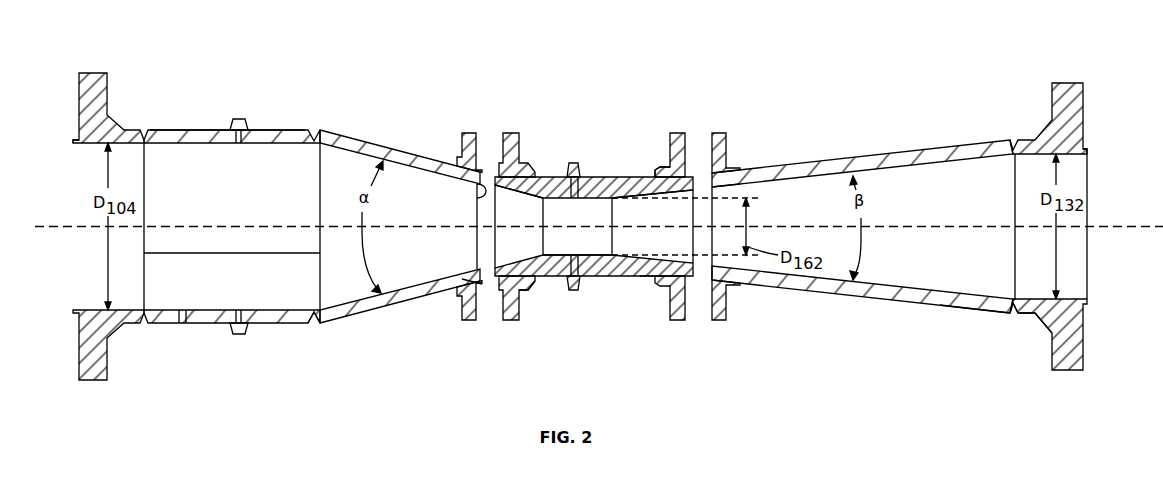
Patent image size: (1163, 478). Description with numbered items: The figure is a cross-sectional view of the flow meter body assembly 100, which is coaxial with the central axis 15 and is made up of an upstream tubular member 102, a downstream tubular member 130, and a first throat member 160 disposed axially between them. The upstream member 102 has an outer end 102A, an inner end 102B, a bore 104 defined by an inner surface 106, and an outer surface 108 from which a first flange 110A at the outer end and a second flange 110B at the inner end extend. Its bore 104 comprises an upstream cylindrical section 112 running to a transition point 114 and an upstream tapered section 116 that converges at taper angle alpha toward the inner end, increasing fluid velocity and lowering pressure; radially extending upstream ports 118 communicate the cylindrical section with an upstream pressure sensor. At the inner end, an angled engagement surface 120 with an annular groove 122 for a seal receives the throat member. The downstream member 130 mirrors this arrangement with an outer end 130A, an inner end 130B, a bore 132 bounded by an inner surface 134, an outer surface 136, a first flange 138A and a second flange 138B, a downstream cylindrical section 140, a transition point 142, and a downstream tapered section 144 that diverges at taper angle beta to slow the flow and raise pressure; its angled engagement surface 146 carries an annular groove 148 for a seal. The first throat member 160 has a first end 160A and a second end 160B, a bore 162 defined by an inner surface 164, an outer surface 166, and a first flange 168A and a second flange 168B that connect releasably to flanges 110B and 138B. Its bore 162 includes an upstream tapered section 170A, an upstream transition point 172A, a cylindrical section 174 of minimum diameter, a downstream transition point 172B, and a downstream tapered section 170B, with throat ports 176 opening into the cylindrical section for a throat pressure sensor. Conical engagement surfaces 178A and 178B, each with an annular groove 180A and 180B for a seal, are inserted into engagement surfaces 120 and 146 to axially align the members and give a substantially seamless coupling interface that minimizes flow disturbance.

The central axis 15 is at (58, 223).
The flow meter body assembly 100 is at (80, 48).
The upstream tubular member 102 is at (101, 92).
The outer end of upstream member 102A is at (70, 140).
The inner end of upstream member 102B is at (478, 276).
The bore of upstream member 104 is at (220, 213).
The inner surface of upstream member 106 is at (160, 145).
The outer surface of upstream member 108 is at (296, 130).
The first flange of upstream member 110A is at (91, 378).
The second flange of upstream member 110B is at (468, 135).
The upstream cylindrical section 112 is at (203, 300).
The transition point 114 is at (313, 324).
The upstream tapered section 116 is at (333, 296).
The upstream ports 118 is at (240, 121).
The upstream engagement surface 120 is at (476, 189).
The annular groove 122 is at (473, 270).
The downstream tubular member 130 is at (1060, 103).
The outer end of downstream member 130A is at (1088, 150).
The inner end of downstream member 130B is at (703, 300).
The bore of downstream member 132 is at (948, 196).
The inner surface of downstream member 134 is at (919, 284).
The outer surface of downstream member 136 is at (925, 149).
The first flange of downstream member 138A is at (1068, 363).
The second flange of downstream member 138B is at (727, 315).
The downstream cylindrical section 140 is at (1033, 296).
The transition point 142 is at (1008, 310).
The downstream tapered section 144 is at (979, 289).
The downstream engagement surface 146 is at (704, 178).
The annular groove 148 is at (716, 184).
The first throat member 160 is at (672, 134).
The first end of throat member 160A is at (514, 298).
The second end of throat member 160B is at (661, 167).
The bore of throat member 162 is at (592, 176).
The inner surface of throat member 164 is at (551, 175).
The outer surface of throat member 166 is at (612, 177).
The first flange of throat member 168A is at (513, 322).
The second flange of throat member 168B is at (680, 323).
The upstream tapered section of throat bore 170A is at (511, 133).
The downstream tapered section of throat bore 170B is at (651, 276).
The upstream transition point 172A is at (548, 200).
The downstream transition point 172B is at (637, 246).
The cylindrical section of throat bore 174 is at (610, 244).
The throat ports 176 is at (570, 165).
The first throat engagement surface 178A is at (503, 301).
The second throat engagement surface 178B is at (688, 165).
The first annular groove 180A is at (497, 274).
The second annular groove 180B is at (693, 178).